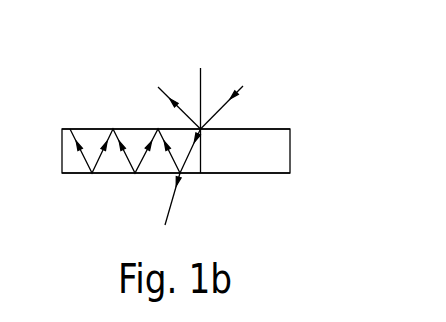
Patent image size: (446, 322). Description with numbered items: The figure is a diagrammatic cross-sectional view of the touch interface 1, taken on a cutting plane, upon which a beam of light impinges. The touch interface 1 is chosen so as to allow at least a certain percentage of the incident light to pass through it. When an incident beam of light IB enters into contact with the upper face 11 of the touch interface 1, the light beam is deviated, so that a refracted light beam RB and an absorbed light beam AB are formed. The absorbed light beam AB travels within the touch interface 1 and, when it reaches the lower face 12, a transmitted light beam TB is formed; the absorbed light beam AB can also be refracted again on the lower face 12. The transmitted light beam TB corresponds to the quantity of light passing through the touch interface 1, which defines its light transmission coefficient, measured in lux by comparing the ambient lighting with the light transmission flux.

The touch interface 1 is at (209, 145).
The upper face 11 is at (283, 117).
The lower face 12 is at (242, 190).
The incident beam of light IB is at (241, 97).
The refracted light beam RB is at (167, 98).
The transmitted light beam TB is at (174, 210).
The absorbed light beam AB is at (75, 167).